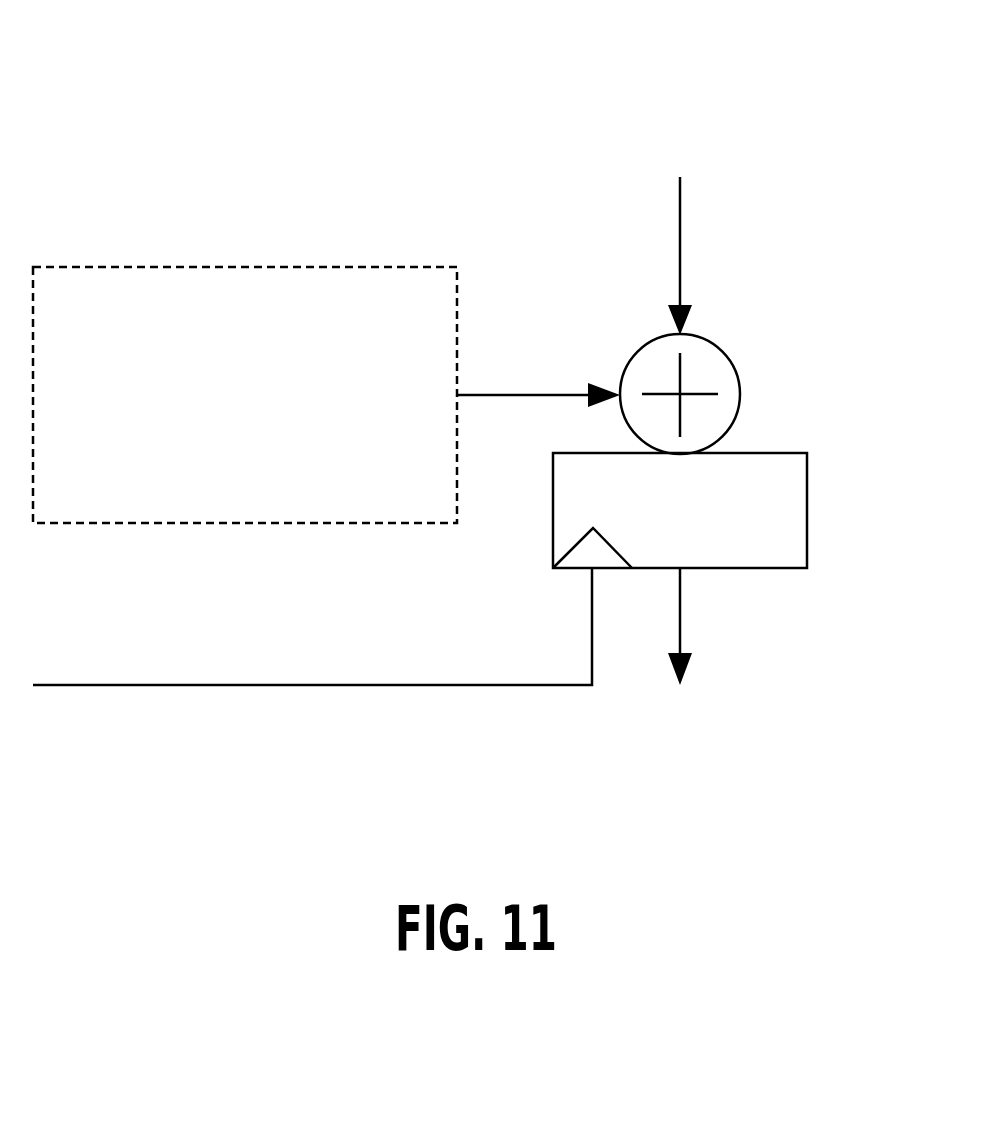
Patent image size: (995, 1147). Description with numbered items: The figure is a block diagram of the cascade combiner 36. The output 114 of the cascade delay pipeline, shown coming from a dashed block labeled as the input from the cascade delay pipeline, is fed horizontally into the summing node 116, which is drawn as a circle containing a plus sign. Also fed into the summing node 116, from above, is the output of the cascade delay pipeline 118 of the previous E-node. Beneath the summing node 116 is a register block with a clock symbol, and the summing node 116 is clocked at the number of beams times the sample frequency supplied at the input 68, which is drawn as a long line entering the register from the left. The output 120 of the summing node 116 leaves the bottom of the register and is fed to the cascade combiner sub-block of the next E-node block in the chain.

The cascade combiner 36 is at (178, 82).
The output of cascade delay pipeline 114 is at (512, 395).
The summing node 116 is at (741, 393).
The output of cascade delay pipeline of previous E-node 118 is at (682, 240).
The output of summing node 120 is at (681, 614).
The clock input 68 is at (136, 688).